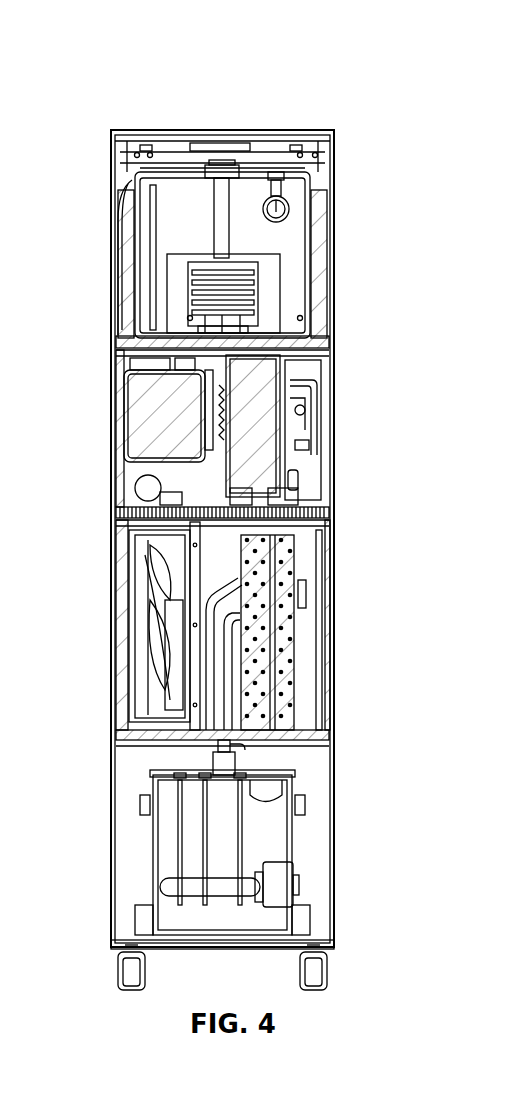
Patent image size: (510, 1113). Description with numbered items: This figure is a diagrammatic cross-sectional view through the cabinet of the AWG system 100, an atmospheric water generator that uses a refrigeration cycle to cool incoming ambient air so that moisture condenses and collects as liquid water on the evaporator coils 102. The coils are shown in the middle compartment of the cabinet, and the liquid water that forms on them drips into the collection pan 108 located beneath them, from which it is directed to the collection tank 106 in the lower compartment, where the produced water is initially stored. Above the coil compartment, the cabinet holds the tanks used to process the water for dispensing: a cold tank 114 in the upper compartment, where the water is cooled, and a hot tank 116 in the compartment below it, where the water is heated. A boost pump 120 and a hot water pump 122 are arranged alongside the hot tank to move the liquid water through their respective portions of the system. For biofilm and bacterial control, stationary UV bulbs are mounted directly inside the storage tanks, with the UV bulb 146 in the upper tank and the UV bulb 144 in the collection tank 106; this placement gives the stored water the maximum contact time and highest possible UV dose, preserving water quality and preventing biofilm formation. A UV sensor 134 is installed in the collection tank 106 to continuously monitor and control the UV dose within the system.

The AWG system 100 is at (72, 103).
The cold tank 114 is at (300, 238).
The UV bulb 146 is at (218, 220).
The hot tank 116 is at (148, 408).
The boost pump 120 is at (256, 370).
The hot water pump 122 is at (130, 487).
The evaporator coils 102 is at (300, 655).
The collection pan 108 is at (325, 730).
The UV sensor 134 is at (265, 760).
The collection tank 106 is at (155, 815).
The UV bulb 144 is at (158, 873).